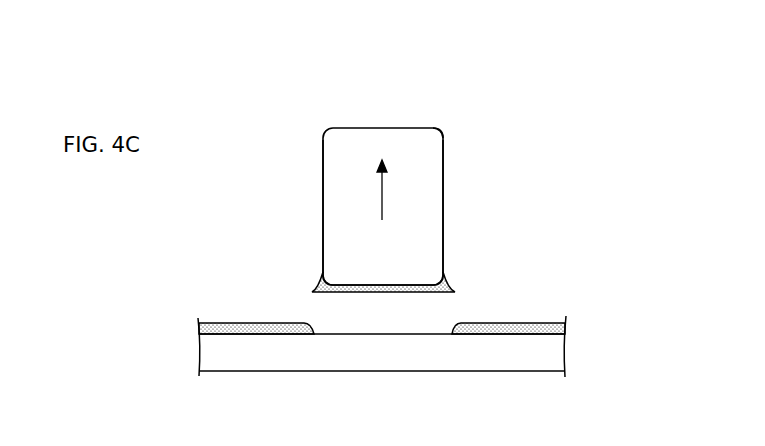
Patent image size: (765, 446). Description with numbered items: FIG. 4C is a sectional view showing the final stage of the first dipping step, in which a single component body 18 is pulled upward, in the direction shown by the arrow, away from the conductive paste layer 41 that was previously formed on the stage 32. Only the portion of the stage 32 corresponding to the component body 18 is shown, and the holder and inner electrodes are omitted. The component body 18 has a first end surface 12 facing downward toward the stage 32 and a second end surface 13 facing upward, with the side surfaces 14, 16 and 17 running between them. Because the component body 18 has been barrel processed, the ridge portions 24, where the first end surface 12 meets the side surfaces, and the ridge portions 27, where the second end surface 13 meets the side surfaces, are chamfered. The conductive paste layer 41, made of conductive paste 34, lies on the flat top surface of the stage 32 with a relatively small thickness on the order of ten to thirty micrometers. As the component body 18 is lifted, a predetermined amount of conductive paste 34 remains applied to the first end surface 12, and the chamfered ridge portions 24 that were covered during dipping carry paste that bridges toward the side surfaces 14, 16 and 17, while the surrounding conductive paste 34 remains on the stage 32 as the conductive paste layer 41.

The first end surface 12 is at (385, 285).
The second end surface 13 is at (381, 128).
The side surface 14 is at (340, 177).
The side surface 16 is at (322, 216).
The side surface 17 is at (444, 213).
The component body 18 is at (444, 173).
The ridge portion 24 is at (318, 288).
The ridge portion 27 is at (442, 130).
The stage 32 is at (565, 358).
The conductive paste 34 is at (226, 323).
The conductive paste layer 41 is at (565, 328).